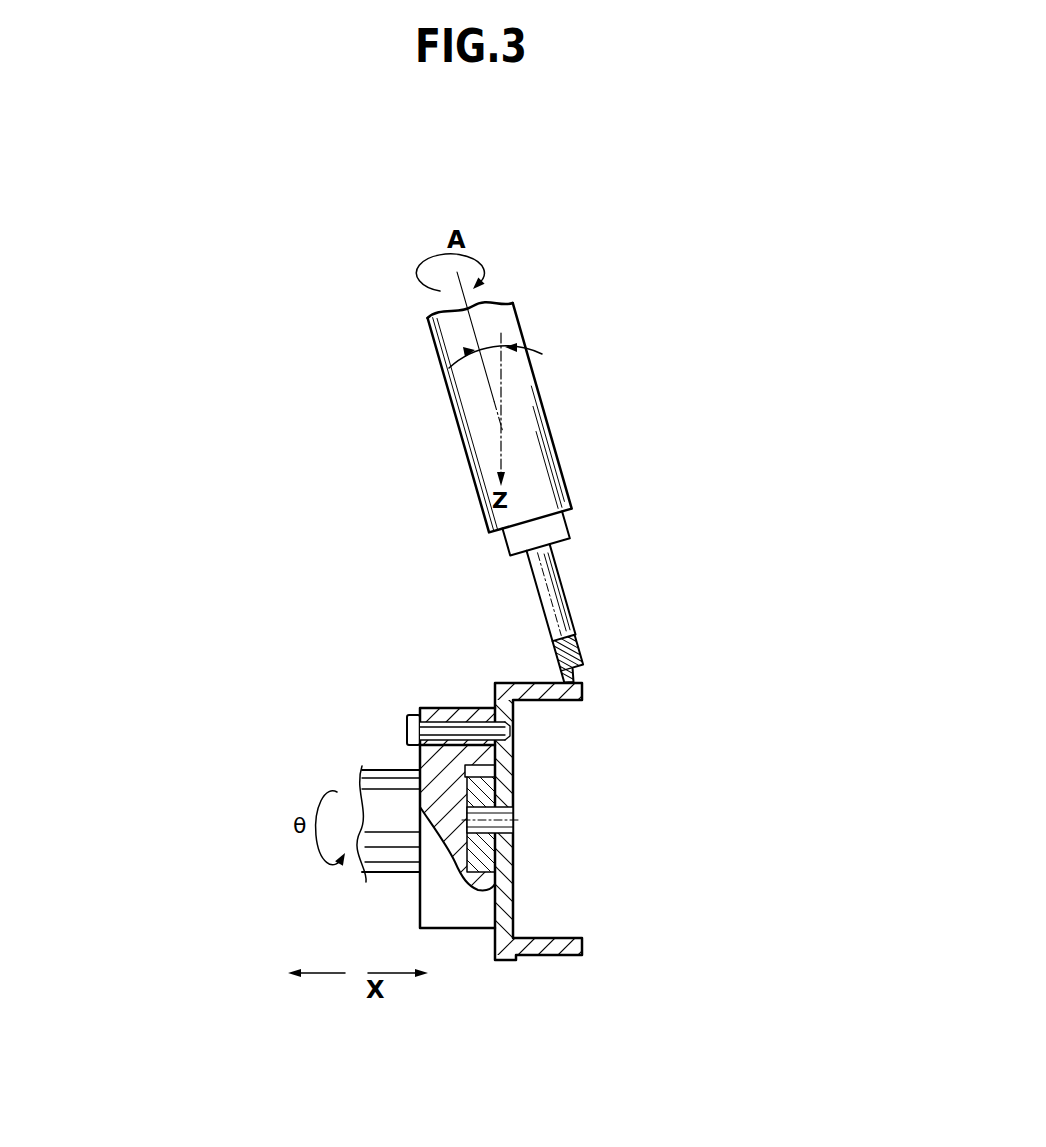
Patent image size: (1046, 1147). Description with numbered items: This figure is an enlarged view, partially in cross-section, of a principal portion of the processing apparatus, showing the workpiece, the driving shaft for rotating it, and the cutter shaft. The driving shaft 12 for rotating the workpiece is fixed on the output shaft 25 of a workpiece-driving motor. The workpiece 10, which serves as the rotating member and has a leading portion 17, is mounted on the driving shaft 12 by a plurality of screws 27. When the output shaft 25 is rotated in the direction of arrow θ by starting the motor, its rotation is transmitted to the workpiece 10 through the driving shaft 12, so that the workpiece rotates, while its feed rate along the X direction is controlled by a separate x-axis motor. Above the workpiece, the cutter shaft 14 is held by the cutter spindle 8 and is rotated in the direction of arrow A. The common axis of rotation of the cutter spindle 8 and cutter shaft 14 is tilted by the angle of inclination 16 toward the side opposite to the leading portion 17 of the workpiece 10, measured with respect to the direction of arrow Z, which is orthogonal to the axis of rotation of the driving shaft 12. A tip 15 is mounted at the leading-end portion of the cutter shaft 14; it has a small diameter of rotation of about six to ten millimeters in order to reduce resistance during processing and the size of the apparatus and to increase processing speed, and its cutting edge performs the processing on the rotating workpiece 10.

The angle of inclination 16 is at (543, 352).
The cutter spindle 8 is at (536, 419).
The cutter shaft 14 is at (563, 580).
The tip 15 is at (558, 665).
The screw 27 is at (412, 715).
The driving shaft for rotating the workpiece 12 is at (417, 764).
The output shaft 25 is at (377, 852).
The leading portion 17 is at (523, 956).
The workpiece 10 is at (497, 955).